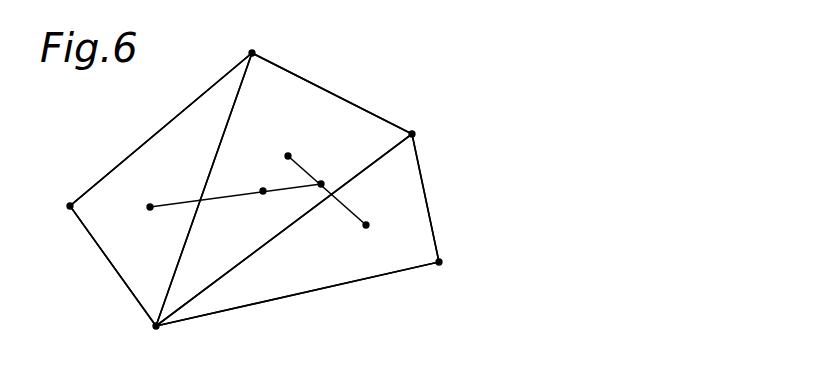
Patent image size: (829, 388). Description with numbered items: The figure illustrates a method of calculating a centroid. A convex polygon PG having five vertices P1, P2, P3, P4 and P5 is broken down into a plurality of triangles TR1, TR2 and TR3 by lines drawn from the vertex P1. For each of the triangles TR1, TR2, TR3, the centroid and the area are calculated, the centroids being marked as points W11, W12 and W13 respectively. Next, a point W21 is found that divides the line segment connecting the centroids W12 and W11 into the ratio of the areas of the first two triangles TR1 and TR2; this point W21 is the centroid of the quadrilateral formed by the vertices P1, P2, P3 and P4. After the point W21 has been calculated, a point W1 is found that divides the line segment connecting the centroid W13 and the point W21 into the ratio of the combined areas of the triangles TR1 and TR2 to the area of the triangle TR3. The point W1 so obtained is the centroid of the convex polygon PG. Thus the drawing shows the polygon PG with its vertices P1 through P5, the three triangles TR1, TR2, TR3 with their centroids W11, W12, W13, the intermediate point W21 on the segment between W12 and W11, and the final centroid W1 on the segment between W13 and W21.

The convex polygon PG is at (384, 104).
The triangle TR1 is at (320, 272).
The triangle TR2 is at (205, 277).
The triangle TR3 is at (133, 275).
The vertex P1 is at (153, 338).
The vertex P2 is at (452, 266).
The vertex P3 is at (426, 136).
The vertex P4 is at (253, 43).
The vertex P5 is at (55, 205).
The centroid of the convex polygon W1 is at (264, 180).
The centroid of triangle W11 is at (388, 226).
The centroid of triangle W12 is at (299, 145).
The centroid of triangle W13 is at (156, 194).
The centroid of quadrilateral W21 is at (334, 173).